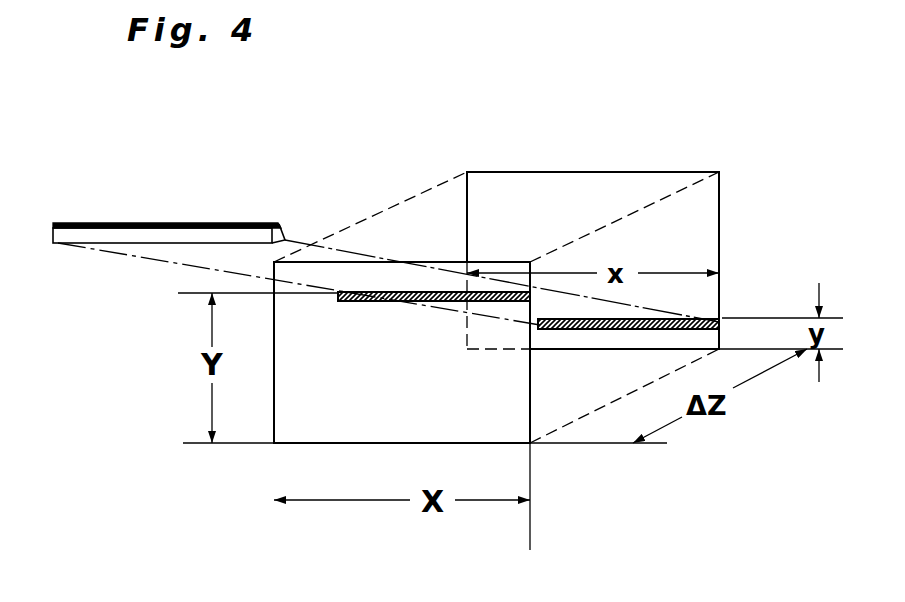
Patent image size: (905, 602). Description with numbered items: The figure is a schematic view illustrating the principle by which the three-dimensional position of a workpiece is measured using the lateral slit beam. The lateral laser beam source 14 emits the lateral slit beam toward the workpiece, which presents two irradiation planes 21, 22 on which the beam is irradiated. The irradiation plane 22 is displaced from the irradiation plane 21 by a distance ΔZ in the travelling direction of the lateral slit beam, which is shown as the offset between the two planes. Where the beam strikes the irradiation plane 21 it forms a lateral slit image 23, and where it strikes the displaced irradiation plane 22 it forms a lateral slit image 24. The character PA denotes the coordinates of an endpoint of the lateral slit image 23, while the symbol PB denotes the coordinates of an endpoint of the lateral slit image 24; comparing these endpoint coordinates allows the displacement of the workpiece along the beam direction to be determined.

The lateral laser beam source 14 is at (133, 238).
The irradiation plane 21 is at (305, 418).
The irradiation plane 22 is at (532, 193).
The lateral slit image 23 is at (378, 291).
The lateral slit image 24 is at (677, 318).
The endpoint coordinates of lateral slit image PA is at (531, 296).
The endpoint coordinates of lateral slit image PB is at (768, 291).